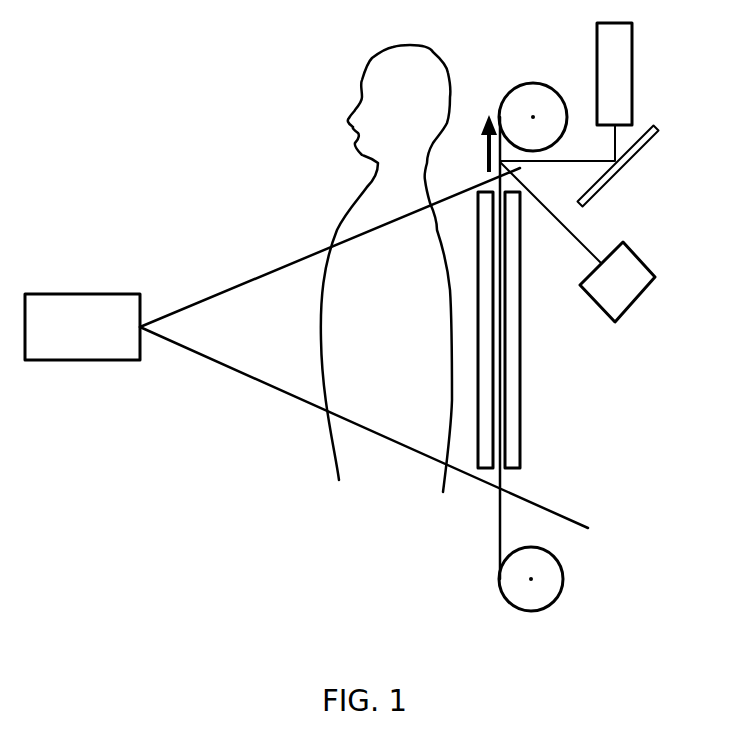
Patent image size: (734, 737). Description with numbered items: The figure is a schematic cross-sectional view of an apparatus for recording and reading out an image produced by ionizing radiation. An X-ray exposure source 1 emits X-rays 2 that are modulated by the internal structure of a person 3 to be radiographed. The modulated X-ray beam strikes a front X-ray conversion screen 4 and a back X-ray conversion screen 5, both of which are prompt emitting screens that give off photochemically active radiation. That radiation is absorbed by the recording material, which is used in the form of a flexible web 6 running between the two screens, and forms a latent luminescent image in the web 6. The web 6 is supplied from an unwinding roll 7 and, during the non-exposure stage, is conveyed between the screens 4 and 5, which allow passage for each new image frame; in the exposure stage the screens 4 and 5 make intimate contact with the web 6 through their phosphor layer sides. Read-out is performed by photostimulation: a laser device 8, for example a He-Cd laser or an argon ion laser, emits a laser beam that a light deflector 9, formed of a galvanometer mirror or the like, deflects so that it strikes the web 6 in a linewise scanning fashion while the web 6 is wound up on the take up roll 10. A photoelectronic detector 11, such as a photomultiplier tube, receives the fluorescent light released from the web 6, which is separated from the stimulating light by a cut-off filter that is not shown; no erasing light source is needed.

The X-ray exposure source 1 is at (96, 348).
The X-rays 2 is at (218, 293).
The person 3 is at (363, 210).
The front X-ray conversion screen 4 is at (487, 440).
The back X-ray conversion screen 5 is at (515, 407).
The web 6 is at (498, 530).
The unwinding roll 7 is at (548, 590).
The laser device 8 is at (622, 73).
The light deflector 9 is at (618, 170).
The take up roll 10 is at (540, 102).
The photoelectronic detector 11 is at (634, 278).